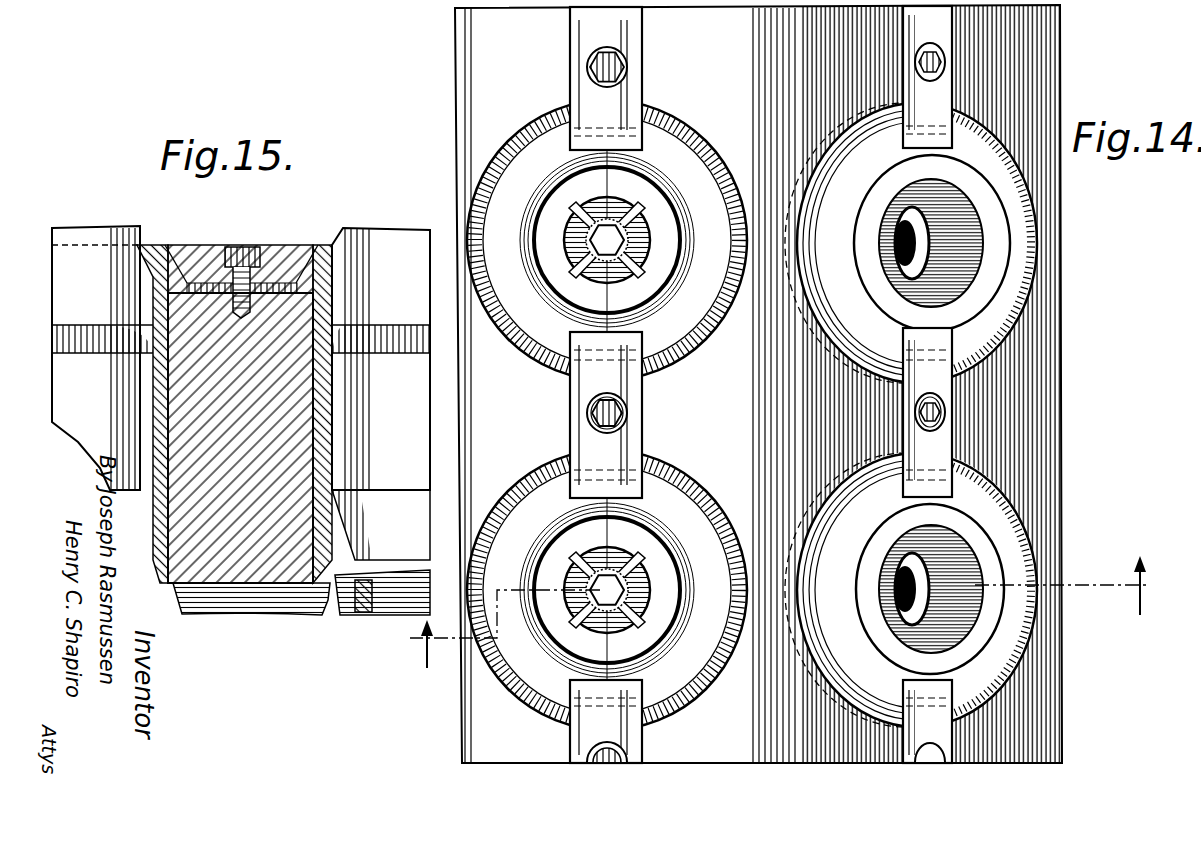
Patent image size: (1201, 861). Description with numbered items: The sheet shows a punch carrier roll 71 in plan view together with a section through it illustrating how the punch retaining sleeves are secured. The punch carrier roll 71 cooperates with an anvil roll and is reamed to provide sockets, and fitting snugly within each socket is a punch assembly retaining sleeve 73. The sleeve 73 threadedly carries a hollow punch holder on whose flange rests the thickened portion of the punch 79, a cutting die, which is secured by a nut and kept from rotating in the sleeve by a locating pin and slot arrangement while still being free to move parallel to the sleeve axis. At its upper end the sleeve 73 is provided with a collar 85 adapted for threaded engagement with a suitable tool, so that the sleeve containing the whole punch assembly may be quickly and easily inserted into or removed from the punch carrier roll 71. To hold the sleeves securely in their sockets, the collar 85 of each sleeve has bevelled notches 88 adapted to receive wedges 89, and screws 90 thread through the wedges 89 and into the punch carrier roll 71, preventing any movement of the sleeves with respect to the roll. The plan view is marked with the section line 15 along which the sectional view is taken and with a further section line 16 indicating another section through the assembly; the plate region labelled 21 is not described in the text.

In FIG. 14, the section line 15— 15 is at (607, 415).
In FIG. 14, the section line 16— 16 is at (778, 627).
In FIG. 14, the mounting plate 21 is at (720, 387).
In FIG. 15, the punch carrier roll 71 is at (246, 455).
In FIG. 15, the punch assembly retaining sleeve 73 is at (394, 446).
In FIG. 15, the punch 79 is at (88, 291).
In FIG. 14, the punch 79 is at (992, 251).
In FIG. 15, the collar 85 is at (170, 244).
In FIG. 14, the collar 85 is at (714, 286).
In FIG. 15, the bevelled notches 88 is at (196, 245).
In FIG. 14, the bevelled notches 88 is at (660, 480).
In FIG. 15, the wedges 89 is at (316, 245).
In FIG. 14, the wedges 89 is at (582, 436).
In FIG. 15, the screws 90 is at (241, 246).
In FIG. 14, the screws 90 is at (610, 414).